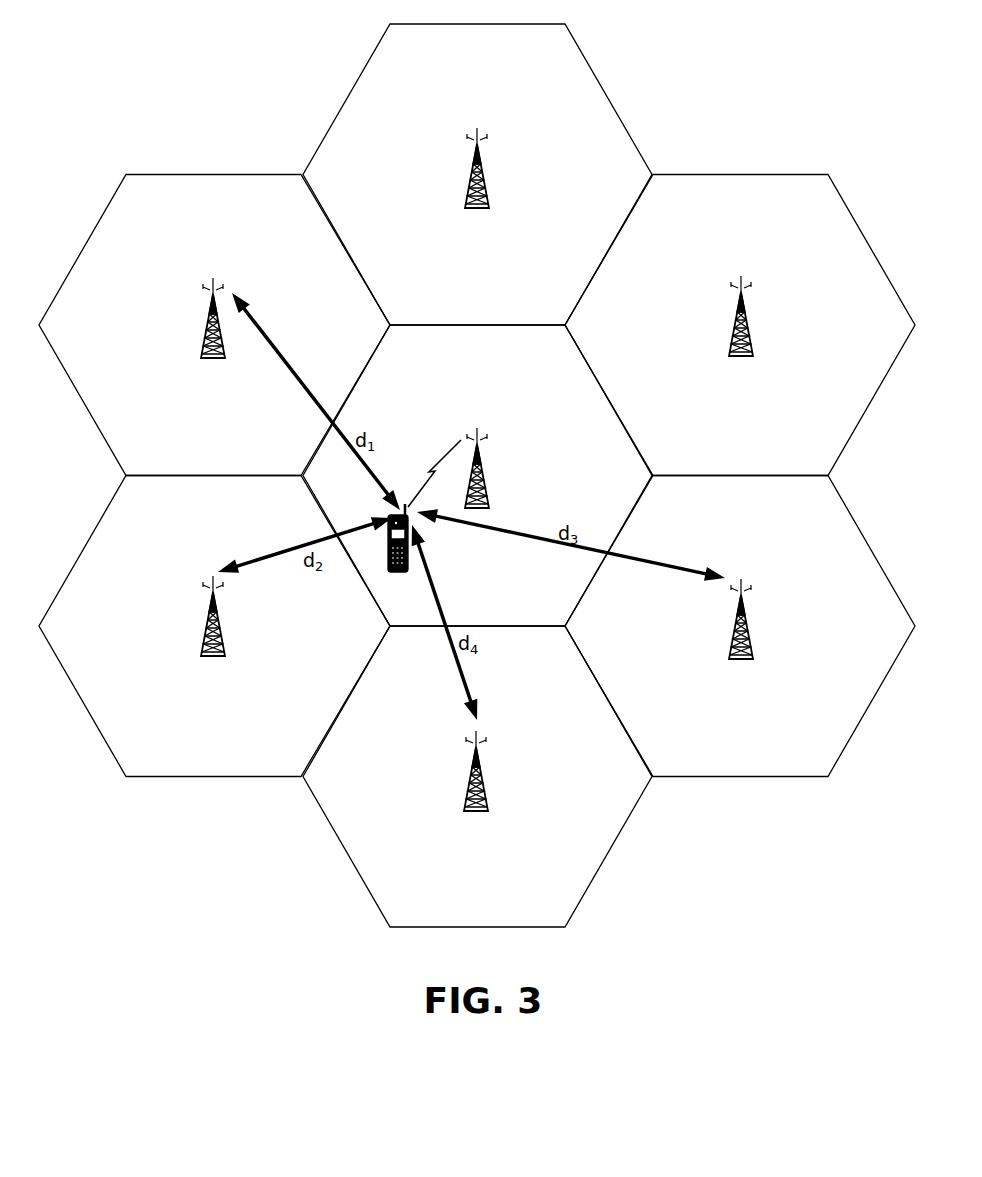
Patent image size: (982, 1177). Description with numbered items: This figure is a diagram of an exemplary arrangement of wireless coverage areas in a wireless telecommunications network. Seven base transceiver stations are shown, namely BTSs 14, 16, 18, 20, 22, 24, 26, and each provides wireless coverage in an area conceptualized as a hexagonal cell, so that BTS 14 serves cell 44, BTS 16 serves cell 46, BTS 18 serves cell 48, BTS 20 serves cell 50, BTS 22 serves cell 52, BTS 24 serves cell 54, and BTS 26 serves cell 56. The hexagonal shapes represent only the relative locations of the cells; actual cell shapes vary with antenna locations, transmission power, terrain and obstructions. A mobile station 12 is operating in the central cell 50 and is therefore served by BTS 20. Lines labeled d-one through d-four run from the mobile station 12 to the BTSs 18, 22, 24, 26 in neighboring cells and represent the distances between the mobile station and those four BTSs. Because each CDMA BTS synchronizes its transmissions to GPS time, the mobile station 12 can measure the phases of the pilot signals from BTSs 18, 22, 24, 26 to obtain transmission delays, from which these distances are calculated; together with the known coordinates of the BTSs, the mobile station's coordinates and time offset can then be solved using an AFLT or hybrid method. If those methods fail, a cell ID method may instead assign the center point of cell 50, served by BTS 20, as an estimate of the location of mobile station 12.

The mobile station 12 is at (386, 556).
The base transceiver station 14 is at (485, 174).
The base transceiver station 16 is at (750, 328).
The base transceiver station 18 is at (204, 326).
The base transceiver station 20 is at (486, 475).
The base transceiver station 22 is at (204, 627).
The base transceiver station 24 is at (752, 630).
The base transceiver station 26 is at (488, 779).
The hexagonal cell 44 is at (465, 58).
The hexagonal cell 46 is at (728, 207).
The hexagonal cell 48 is at (201, 207).
The hexagonal cell 50 is at (465, 358).
The hexagonal cell 52 is at (201, 508).
The hexagonal cell 54 is at (728, 505).
The hexagonal cell 56 is at (463, 915).